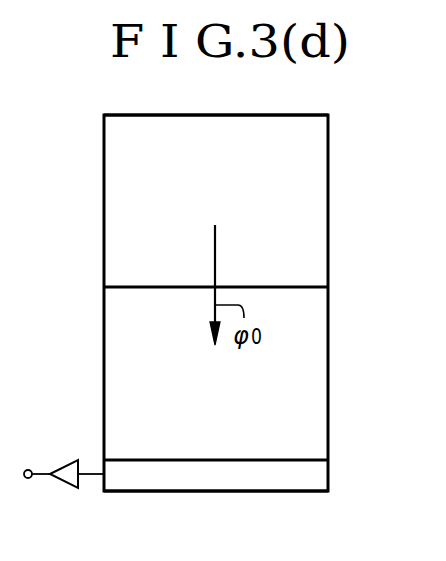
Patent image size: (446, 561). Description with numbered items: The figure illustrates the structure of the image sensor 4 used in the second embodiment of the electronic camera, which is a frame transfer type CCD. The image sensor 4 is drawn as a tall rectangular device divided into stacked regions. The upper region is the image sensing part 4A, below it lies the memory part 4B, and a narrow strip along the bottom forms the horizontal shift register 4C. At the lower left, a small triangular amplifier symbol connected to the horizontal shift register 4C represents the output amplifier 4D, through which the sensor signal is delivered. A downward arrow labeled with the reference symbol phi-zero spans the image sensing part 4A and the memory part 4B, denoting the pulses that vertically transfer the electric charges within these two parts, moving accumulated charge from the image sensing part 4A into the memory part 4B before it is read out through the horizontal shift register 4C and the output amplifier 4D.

The image sensor 4 is at (104, 178).
The image sensing part 4A is at (323, 158).
The memory part 4B is at (322, 328).
The horizontal shift register 4C is at (322, 480).
The output amplifier 4D is at (72, 460).